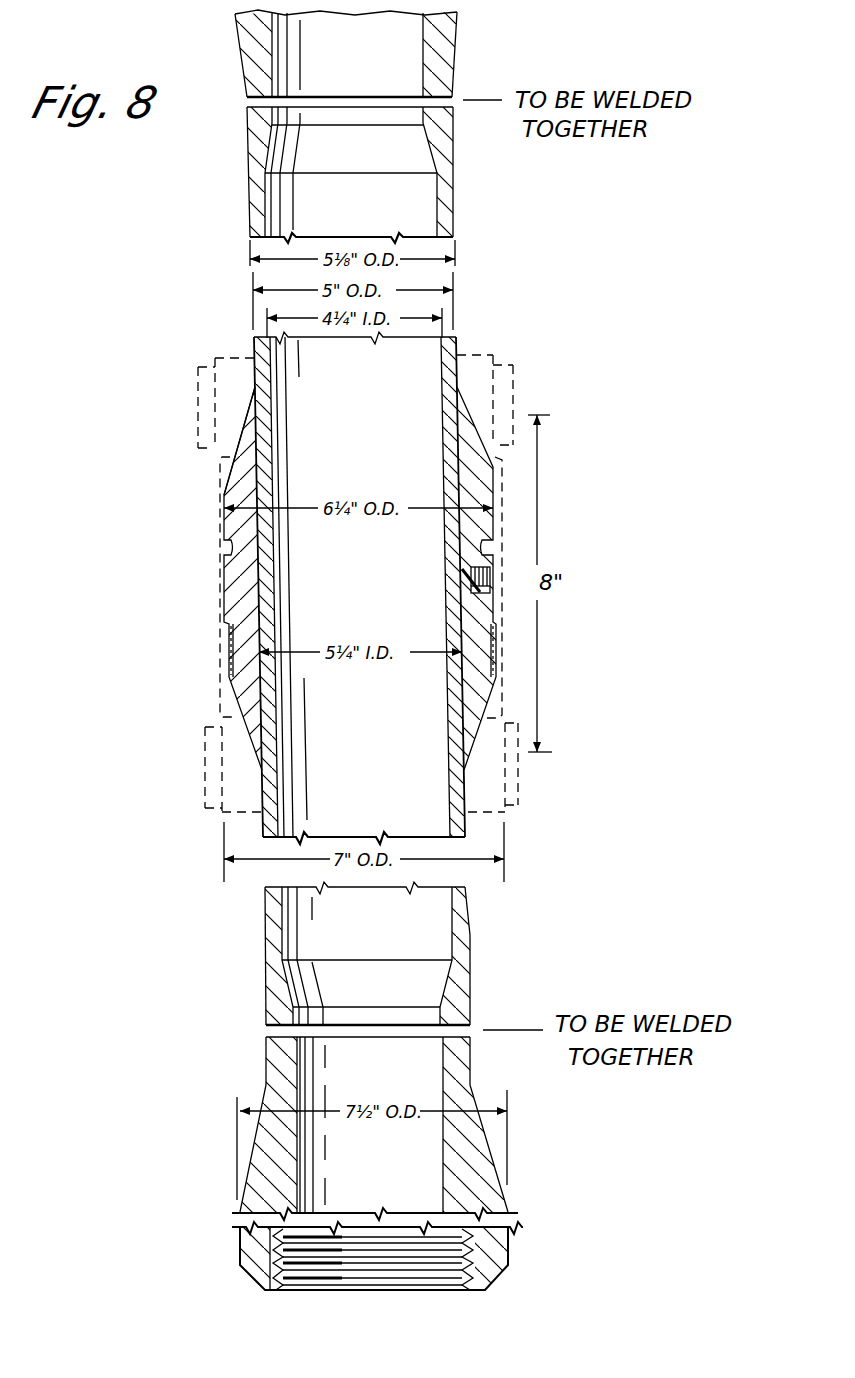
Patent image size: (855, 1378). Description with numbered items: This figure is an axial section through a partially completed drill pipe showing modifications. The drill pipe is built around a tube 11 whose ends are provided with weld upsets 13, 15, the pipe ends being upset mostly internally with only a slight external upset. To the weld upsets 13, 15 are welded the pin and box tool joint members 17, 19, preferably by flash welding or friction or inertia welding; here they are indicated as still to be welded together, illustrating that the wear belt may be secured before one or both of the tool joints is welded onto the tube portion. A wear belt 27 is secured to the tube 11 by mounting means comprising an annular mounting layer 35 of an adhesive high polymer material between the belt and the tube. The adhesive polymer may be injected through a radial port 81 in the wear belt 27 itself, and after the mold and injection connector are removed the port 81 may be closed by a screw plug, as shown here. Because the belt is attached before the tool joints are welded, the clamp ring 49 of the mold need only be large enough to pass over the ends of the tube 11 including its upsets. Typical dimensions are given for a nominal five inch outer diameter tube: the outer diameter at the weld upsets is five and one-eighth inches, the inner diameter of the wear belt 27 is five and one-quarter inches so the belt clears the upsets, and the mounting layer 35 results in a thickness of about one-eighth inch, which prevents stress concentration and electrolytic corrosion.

The tube 11 is at (274, 571).
The weld upset 13 is at (257, 143).
The weld upset 15 is at (277, 997).
The pin tool joint member 17 is at (253, 33).
The box tool joint member 19 is at (247, 1250).
The wear belt 27 is at (240, 608).
The mounting layer 35 is at (249, 462).
The clamp ring 49 is at (523, 781).
The radial port 81 is at (467, 570).